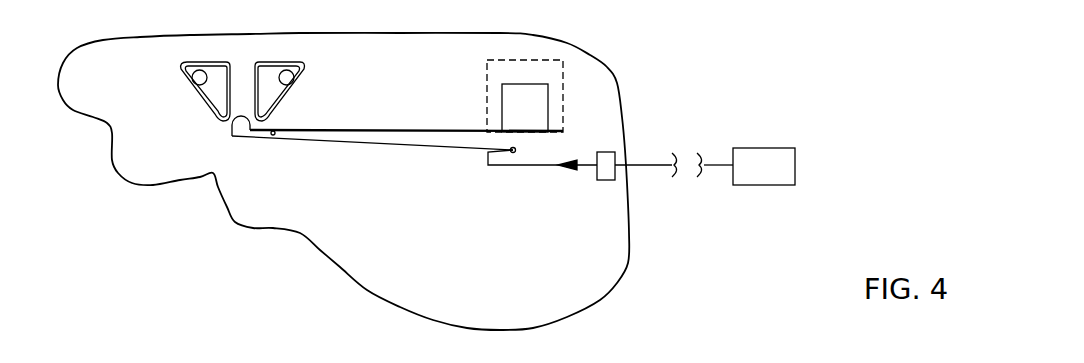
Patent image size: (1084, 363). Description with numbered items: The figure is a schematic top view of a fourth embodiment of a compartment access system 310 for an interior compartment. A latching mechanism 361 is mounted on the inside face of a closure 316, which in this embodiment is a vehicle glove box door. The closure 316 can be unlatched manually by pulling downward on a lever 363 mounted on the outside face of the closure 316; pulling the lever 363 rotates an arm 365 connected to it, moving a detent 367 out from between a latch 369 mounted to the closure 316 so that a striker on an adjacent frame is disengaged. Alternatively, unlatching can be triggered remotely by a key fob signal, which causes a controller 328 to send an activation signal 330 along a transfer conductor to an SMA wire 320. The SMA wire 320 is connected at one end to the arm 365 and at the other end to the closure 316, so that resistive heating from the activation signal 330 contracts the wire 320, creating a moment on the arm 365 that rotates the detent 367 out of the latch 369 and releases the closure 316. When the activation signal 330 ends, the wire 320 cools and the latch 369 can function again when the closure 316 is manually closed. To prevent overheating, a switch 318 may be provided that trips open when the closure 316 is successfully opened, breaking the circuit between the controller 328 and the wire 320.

The compartment access system 310 is at (772, 53).
The closure 316 is at (577, 50).
The switch 318 is at (605, 150).
The SMA wire 320 is at (461, 149).
The controller 328 is at (764, 166).
The activation signal 330 is at (587, 167).
The latching mechanism 361 is at (228, 143).
The lever 363 is at (525, 60).
The arm 365 is at (378, 129).
The detent 367 is at (232, 140).
The latch 369 is at (232, 133).